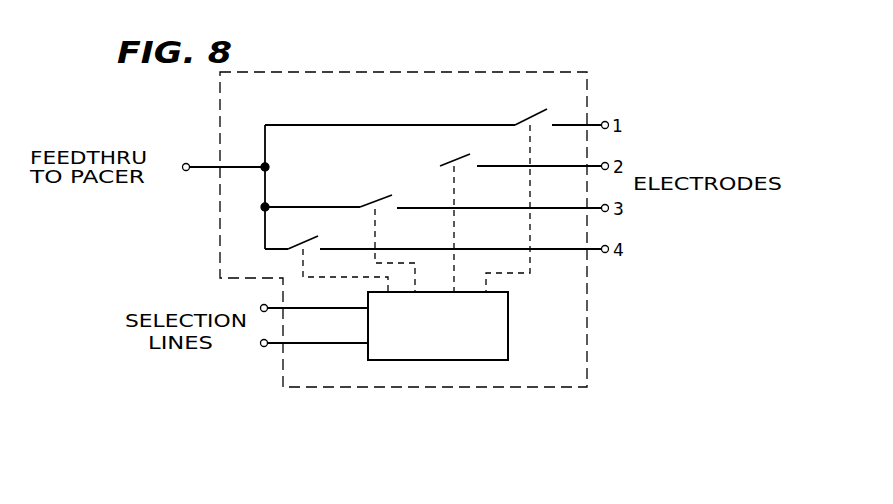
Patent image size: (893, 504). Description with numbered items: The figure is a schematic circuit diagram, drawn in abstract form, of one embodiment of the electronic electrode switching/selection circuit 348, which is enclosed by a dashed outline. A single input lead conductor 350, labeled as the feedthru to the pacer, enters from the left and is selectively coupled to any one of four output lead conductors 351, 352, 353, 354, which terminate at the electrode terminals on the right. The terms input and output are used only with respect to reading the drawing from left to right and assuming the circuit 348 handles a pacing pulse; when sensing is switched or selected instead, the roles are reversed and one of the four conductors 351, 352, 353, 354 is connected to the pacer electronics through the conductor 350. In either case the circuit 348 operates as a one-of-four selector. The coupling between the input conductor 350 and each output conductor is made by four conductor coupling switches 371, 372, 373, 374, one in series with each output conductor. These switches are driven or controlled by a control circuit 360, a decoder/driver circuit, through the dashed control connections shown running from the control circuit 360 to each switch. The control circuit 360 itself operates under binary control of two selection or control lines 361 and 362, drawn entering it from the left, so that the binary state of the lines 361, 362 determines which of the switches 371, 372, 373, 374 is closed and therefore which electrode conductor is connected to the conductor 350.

The electronic electrode switching/selection circuit 348 is at (545, 72).
The input lead conductor 350 is at (210, 170).
The output lead conductor 351 is at (565, 122).
The output lead conductor 352 is at (573, 166).
The output lead conductor 353 is at (565, 209).
The output lead conductor 354 is at (565, 249).
The control circuit 360 is at (453, 360).
The selection line 361 is at (345, 310).
The selection line 362 is at (345, 346).
The conductor coupling switch 371 is at (535, 110).
The conductor coupling switch 372 is at (460, 152).
The conductor coupling switch 373 is at (385, 195).
The conductor coupling switch 374 is at (316, 236).